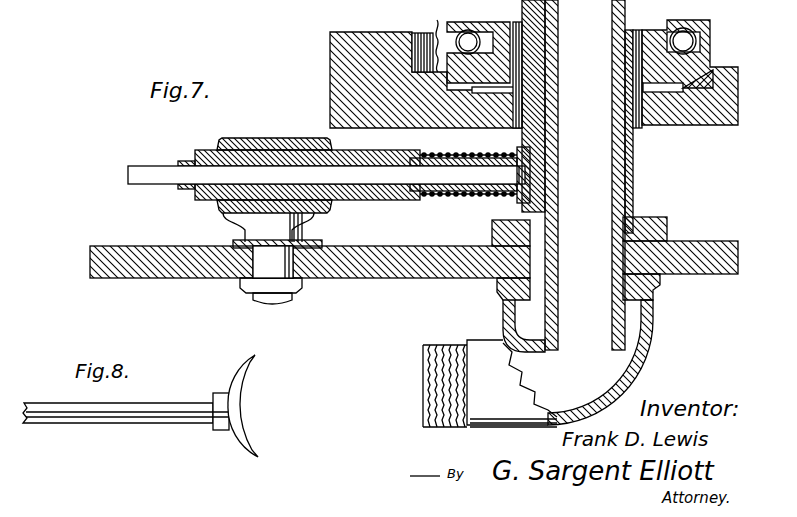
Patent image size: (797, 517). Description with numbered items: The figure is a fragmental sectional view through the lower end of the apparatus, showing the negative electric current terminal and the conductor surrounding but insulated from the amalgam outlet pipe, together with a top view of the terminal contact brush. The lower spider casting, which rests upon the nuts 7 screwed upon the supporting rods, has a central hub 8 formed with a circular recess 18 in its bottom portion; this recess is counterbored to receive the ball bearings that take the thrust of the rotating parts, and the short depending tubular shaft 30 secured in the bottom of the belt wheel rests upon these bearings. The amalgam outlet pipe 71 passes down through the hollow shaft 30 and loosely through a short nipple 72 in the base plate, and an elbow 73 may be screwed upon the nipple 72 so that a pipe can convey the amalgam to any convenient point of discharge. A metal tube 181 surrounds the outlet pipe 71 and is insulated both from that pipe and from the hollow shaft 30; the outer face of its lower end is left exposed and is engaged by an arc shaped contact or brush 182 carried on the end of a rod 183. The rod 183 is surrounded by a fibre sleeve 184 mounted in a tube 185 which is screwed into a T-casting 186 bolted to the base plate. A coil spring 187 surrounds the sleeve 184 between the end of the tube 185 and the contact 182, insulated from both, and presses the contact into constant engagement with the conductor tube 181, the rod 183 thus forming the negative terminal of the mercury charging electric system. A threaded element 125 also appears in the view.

In FIG. 7, the nuts 7 is at (99, 250).
In FIG. 7, the central hub 8 is at (330, 75).
In FIG. 7, the circular recess 18 is at (717, 80).
In FIG. 7, the tubular shaft 30 is at (497, 22).
In FIG. 7, the amalgam outlet pipe 71 is at (585, 175).
In FIG. 7, the nipple 72 is at (630, 225).
In FIG. 7, the elbow 73 is at (656, 329).
In FIG. 7, the threaded plug 125 is at (437, 33).
In FIG. 7, the metal tube 181 is at (633, 148).
In FIG. 7, the arc shaped contact 182 is at (517, 204).
In FIG. 8, the arc shaped contact 182 is at (230, 384).
In FIG. 7, the rod 183 is at (144, 175).
In FIG. 8, the rod 183 is at (117, 413).
In FIG. 7, the fibre sleeve 184 is at (182, 190).
In FIG. 7, the tube 185 is at (381, 196).
In FIG. 7, the T-casting 186 is at (261, 148).
In FIG. 7, the coil spring 187 is at (480, 153).